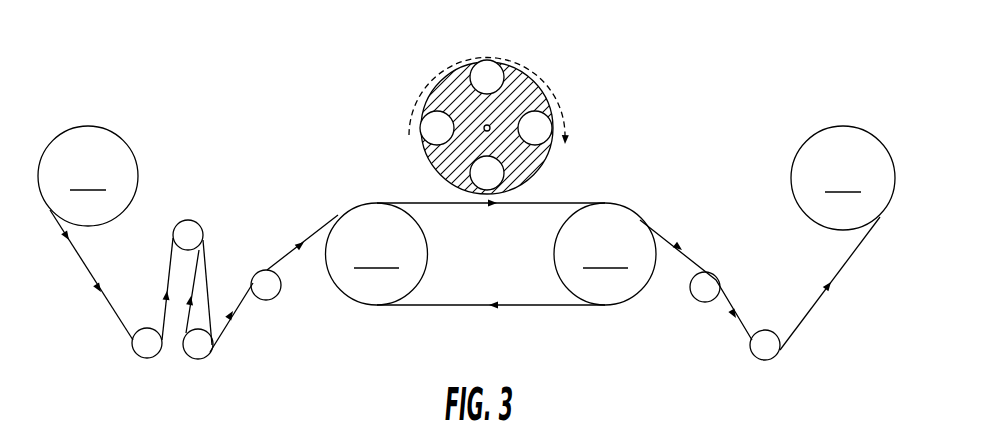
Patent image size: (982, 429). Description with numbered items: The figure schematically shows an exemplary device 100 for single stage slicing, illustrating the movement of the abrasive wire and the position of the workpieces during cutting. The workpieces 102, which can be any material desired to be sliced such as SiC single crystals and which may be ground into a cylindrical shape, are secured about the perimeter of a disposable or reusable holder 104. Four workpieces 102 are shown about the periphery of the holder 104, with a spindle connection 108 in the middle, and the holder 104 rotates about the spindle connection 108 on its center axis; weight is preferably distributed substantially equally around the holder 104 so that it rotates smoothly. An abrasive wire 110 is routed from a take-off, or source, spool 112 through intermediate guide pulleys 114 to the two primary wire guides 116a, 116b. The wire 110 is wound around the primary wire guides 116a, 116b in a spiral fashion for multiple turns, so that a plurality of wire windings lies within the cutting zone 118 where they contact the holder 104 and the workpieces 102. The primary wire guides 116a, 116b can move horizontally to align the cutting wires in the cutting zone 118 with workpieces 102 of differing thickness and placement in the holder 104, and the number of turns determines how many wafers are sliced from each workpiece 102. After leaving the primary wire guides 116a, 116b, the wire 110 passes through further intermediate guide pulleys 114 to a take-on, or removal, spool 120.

The device for single stage slicing 100 is at (232, 104).
The workpieces 102 is at (506, 64).
The holder 104 is at (449, 91).
The spindle connection 108 is at (479, 122).
The abrasive wire 110 is at (77, 270).
The take-off spool 112 is at (88, 176).
The intermediate guide pulleys 114 is at (144, 326).
The primary wire guide 116a is at (377, 254).
The primary wire guide 116b is at (605, 254).
The cutting zone 118 is at (439, 212).
The take-on spool 120 is at (843, 178).